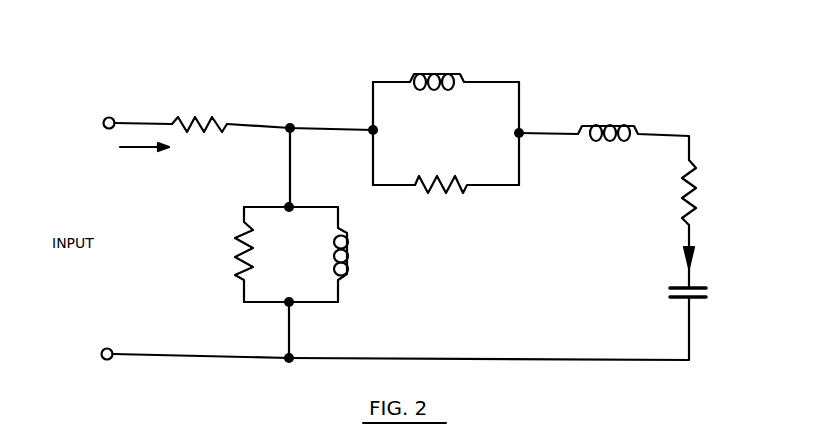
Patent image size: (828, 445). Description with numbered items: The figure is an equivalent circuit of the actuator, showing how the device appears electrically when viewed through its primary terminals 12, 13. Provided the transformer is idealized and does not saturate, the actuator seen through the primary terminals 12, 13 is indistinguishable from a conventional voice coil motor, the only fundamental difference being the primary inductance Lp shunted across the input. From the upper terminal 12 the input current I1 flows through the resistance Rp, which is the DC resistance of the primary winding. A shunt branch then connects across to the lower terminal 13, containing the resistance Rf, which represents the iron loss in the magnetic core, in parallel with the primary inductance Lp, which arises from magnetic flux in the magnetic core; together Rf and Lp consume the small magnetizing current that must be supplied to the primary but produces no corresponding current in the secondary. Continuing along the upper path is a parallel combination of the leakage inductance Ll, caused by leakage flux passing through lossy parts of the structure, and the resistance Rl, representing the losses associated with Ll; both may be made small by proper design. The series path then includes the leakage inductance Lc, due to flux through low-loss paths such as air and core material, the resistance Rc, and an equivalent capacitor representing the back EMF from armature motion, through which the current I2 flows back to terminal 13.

The primary terminal 12 is at (105, 130).
The primary terminal 13 is at (102, 349).
The primary winding DC resistance Rp is at (199, 112).
The leakage inductance Ll is at (446, 69).
The leakage loss resistance Rl is at (446, 173).
The low-loss leakage inductance Lc is at (604, 130).
The series resistance Rc is at (704, 224).
The iron loss resistance Rf is at (224, 254).
The primary inductance Lp is at (355, 254).
The input current I1 is at (144, 157).
The secondary branch current I2 is at (701, 260).